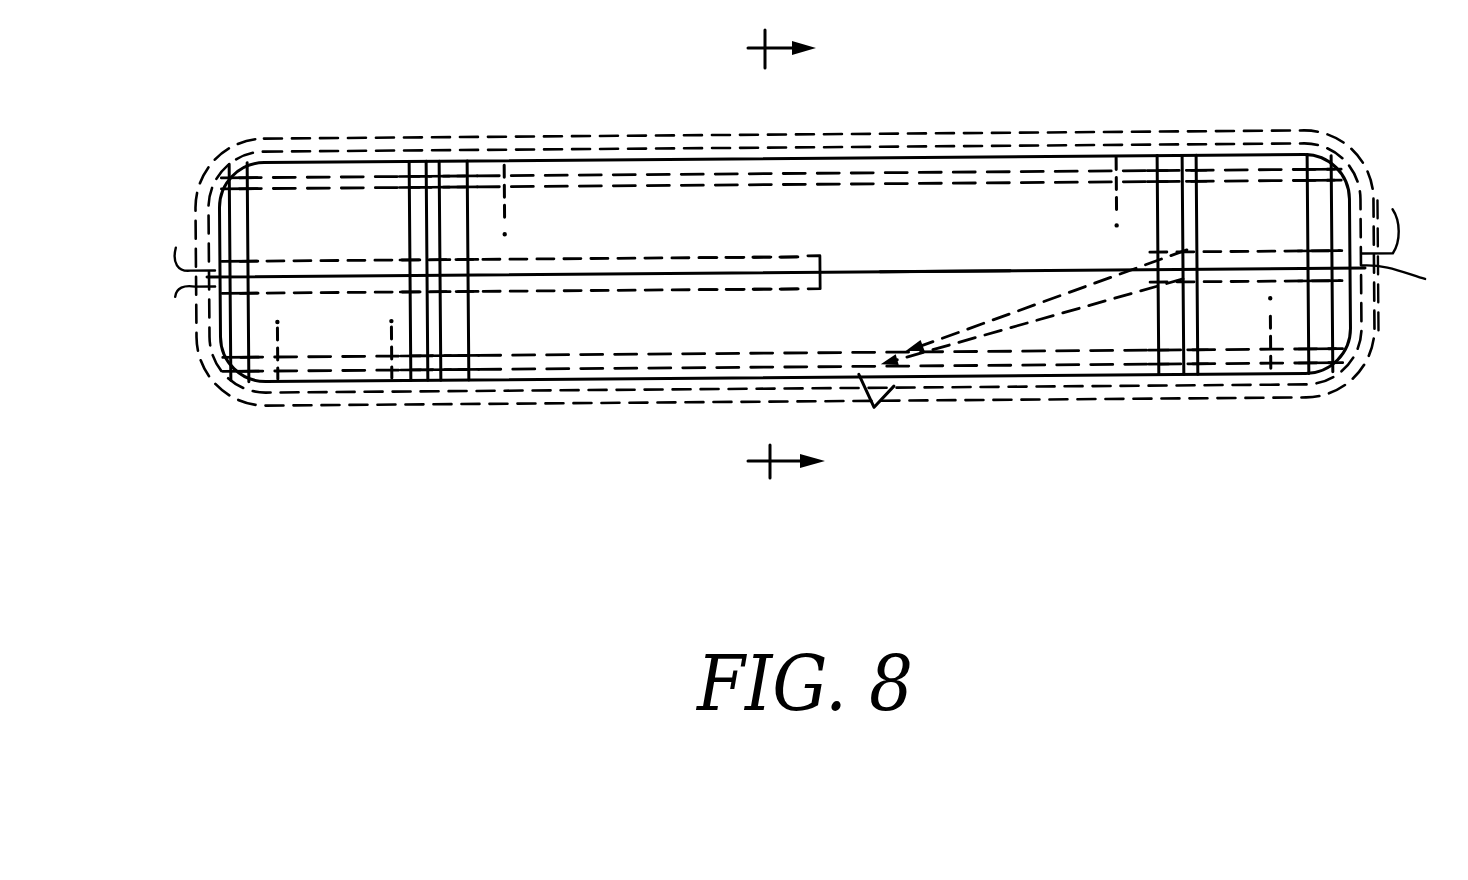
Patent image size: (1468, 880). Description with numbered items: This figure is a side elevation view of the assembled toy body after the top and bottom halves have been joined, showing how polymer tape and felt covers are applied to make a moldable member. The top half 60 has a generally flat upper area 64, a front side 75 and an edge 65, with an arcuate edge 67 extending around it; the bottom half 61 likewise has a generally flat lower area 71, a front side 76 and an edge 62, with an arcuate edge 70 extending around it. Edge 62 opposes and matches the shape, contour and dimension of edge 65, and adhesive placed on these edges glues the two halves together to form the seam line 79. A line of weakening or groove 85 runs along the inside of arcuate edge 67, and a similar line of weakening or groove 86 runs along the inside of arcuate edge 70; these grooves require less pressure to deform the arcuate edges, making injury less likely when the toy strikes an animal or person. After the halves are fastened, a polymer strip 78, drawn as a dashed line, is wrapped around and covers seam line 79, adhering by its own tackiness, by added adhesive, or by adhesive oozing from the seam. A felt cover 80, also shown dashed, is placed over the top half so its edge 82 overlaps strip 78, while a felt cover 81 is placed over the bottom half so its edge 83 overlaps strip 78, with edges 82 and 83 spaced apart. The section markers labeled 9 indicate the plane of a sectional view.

The half 60 is at (1137, 222).
The half 61 is at (359, 322).
The edge 62 is at (878, 274).
The upper area 64 is at (1053, 155).
The edge 65 is at (933, 268).
The arcuate edge 67 is at (1330, 160).
The arcuate edge 70 is at (230, 368).
The lower area 71 is at (1073, 378).
The front side 75 is at (826, 236).
The front side 76 is at (731, 332).
The polymer strip 78 is at (573, 255).
The seam line 79 is at (1037, 258).
The felt cover 80 is at (538, 120).
The felt cover 81 is at (1208, 410).
The edge 82 is at (173, 230).
The edge 83 is at (176, 294).
The line of weakening 85 is at (372, 194).
The line of weakening 86 is at (522, 312).
The section line 9- 9 is at (786, 254).